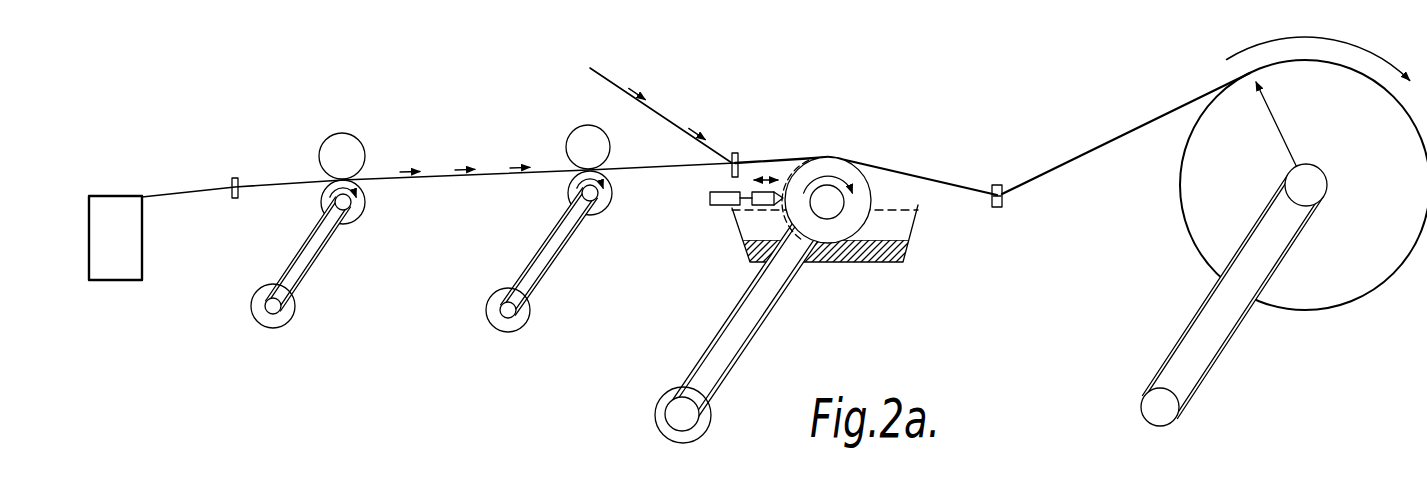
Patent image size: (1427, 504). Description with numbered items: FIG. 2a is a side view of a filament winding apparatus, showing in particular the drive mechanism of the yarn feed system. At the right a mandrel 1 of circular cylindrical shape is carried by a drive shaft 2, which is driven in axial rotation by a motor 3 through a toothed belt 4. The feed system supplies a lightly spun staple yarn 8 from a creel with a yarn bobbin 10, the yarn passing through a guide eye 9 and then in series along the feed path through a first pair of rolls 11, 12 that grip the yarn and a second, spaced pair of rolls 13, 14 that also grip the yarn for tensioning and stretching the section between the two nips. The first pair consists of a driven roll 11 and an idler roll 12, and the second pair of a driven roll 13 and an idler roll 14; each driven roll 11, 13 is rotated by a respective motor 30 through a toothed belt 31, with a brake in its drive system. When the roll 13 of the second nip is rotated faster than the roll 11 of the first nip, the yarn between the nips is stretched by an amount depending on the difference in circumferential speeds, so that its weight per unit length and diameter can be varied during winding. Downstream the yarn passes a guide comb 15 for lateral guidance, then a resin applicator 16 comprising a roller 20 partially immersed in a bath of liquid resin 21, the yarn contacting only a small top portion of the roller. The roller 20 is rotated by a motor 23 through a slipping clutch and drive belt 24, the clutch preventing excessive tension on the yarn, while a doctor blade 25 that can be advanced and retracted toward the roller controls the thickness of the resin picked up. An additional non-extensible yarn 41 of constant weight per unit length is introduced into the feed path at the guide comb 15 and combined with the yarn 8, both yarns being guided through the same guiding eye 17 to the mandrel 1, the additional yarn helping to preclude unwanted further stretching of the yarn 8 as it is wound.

The mandrel 1 is at (1368, 272).
The drive shaft 2 is at (1316, 190).
The motor 3 is at (1145, 407).
The toothed belt 4 is at (1192, 315).
The lightly spun yarn 8 is at (683, 171).
The guide eye 9 is at (235, 178).
The yarn bobbin 10 is at (117, 262).
The driven roll 11 is at (360, 217).
The idler roll 12 is at (347, 148).
The driven roll 13 is at (570, 190).
The idler roll 14 is at (585, 130).
The guide comb 15 is at (735, 153).
The resin applicator 16 is at (855, 151).
The guiding eye 17 is at (1000, 208).
The roller 20 is at (843, 227).
The bath of liquid resin 21 is at (906, 256).
The motor 23 is at (668, 428).
The drive belt 24 is at (768, 323).
The doctor blade 25 is at (782, 193).
The motor 30 is at (292, 317).
The toothed belt 31 is at (308, 244).
The additional yarn 41 is at (613, 82).